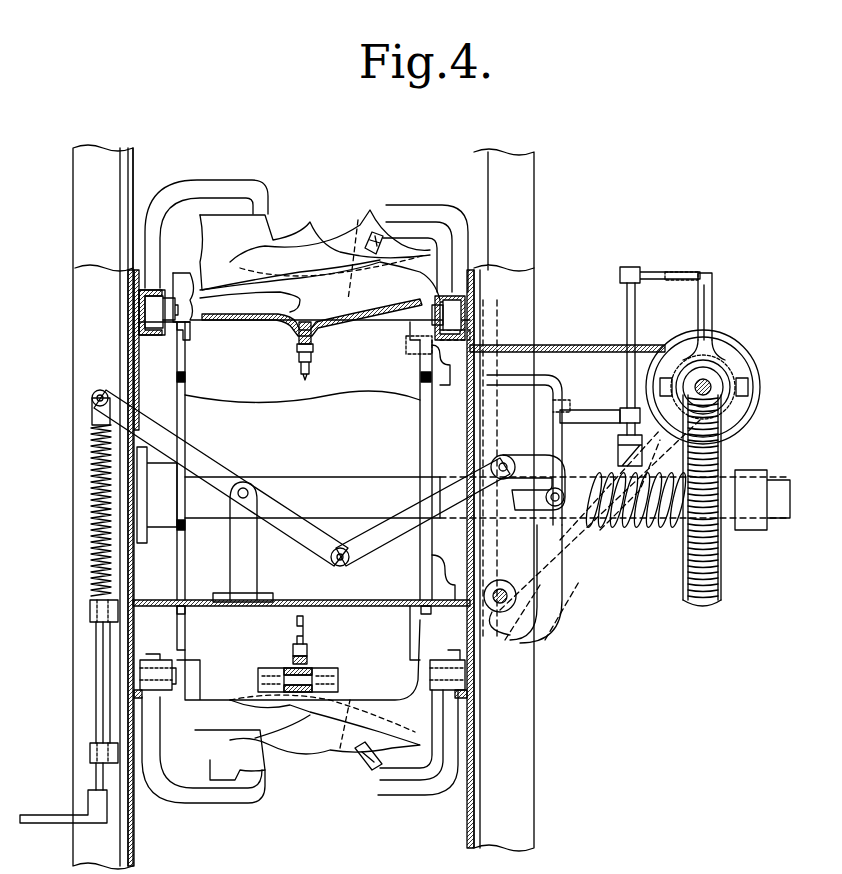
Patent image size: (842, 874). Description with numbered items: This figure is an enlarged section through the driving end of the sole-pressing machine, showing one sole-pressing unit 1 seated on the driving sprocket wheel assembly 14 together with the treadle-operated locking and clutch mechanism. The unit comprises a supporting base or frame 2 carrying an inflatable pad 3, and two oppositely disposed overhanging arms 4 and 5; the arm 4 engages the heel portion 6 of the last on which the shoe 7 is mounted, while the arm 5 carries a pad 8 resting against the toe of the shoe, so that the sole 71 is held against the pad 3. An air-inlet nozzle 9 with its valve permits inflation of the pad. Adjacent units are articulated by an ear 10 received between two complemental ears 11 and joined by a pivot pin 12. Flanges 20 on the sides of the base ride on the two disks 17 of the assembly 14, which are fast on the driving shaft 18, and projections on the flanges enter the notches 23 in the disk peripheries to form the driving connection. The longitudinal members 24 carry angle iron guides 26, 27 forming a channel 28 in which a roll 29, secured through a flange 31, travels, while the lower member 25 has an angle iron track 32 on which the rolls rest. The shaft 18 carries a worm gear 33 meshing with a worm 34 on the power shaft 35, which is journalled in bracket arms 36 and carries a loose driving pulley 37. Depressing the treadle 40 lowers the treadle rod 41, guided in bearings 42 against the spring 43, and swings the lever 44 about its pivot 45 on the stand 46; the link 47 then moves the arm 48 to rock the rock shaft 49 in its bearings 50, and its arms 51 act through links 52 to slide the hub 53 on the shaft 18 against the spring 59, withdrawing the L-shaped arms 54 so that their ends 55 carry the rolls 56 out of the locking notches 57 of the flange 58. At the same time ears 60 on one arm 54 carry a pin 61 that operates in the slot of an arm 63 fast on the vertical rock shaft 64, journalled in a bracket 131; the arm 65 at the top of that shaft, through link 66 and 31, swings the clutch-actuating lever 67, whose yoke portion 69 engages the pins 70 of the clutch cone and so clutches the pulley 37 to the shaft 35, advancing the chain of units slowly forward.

The sole-pressing unit 1 is at (185, 288).
The supporting base or frame 2 is at (345, 318).
The inflatable pad 3 is at (370, 300).
The overhanging arm 4 is at (237, 202).
The overhanging arm 5 is at (425, 222).
The heel portion of last 6 is at (278, 232).
The shoe 7 is at (312, 242).
The pad 8 is at (378, 230).
The air-inlet nozzle 9 is at (298, 359).
The ear 10 is at (282, 670).
The complemental ears 11 is at (264, 676).
The pivot pin 12 is at (291, 658).
The sprocket wheel assembly 14 is at (176, 360).
The disks 17 is at (360, 400).
The driving shaft 18 is at (333, 478).
The flanges 20 is at (190, 335).
The notches 23 is at (186, 376).
The longitudinal member 24 is at (132, 346).
The longitudinal member 25 is at (128, 660).
The angle iron guide 26 is at (139, 290).
The angle iron guide 27 is at (142, 330).
The channel 28 is at (147, 315).
The roll 29 is at (158, 300).
The flange 31 is at (705, 273).
The angle iron track or way 32 is at (134, 694).
The worm gear 33 is at (712, 596).
The worm 34 is at (712, 372).
The power shaft 35 is at (725, 375).
The bracket arms 36 is at (606, 345).
The driving pulley 37 is at (752, 385).
The treadle 40 is at (48, 822).
The treadle rod 41 is at (96, 668).
The bearings 42 is at (88, 610).
The spring 43 is at (90, 504).
The lever 44 is at (218, 462).
The pivot 45 is at (247, 490).
The stand or support 46 is at (255, 558).
The link 47 is at (392, 535).
The arm 48 is at (512, 460).
The rock shaft 49 is at (510, 598).
The bearings 50 is at (530, 635).
The arms 51 is at (568, 565).
The link 52 is at (530, 470).
The hub 53 is at (580, 530).
The L-shaped arms 54 is at (562, 385).
The ends of arms 55 is at (468, 350).
The rolls 56 is at (420, 355).
The locking notches 57 is at (440, 450).
The flange 58 is at (425, 435).
The spring 59 is at (658, 525).
The ears 60 is at (590, 423).
The pin 61 is at (555, 403).
The arm 63 is at (618, 412).
The vertical rock shaft 64 is at (636, 320).
The arm 65 is at (660, 272).
The link 66 is at (682, 281).
The clutch-actuating lever 67 is at (715, 320).
The yoke portion 69 is at (758, 398).
The pins 70 is at (663, 380).
The sole 71 is at (352, 235).
The bracket 131 is at (618, 453).